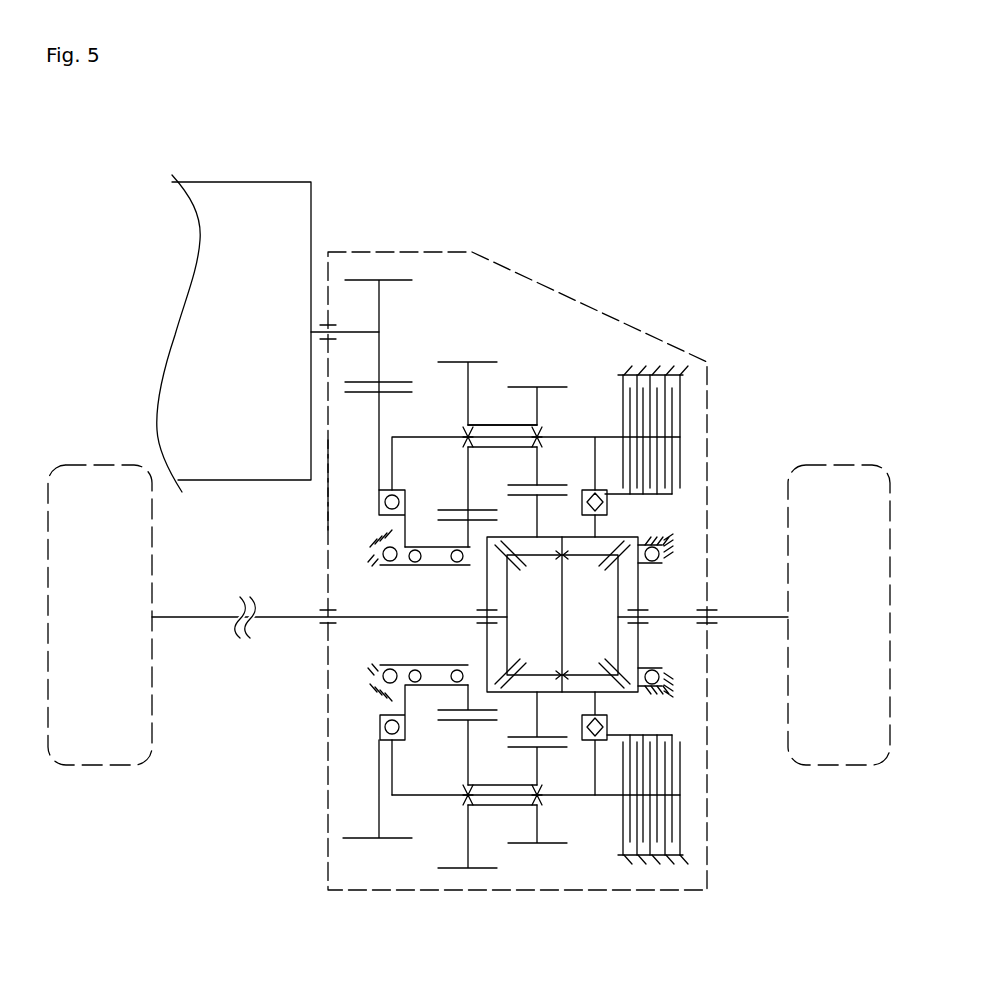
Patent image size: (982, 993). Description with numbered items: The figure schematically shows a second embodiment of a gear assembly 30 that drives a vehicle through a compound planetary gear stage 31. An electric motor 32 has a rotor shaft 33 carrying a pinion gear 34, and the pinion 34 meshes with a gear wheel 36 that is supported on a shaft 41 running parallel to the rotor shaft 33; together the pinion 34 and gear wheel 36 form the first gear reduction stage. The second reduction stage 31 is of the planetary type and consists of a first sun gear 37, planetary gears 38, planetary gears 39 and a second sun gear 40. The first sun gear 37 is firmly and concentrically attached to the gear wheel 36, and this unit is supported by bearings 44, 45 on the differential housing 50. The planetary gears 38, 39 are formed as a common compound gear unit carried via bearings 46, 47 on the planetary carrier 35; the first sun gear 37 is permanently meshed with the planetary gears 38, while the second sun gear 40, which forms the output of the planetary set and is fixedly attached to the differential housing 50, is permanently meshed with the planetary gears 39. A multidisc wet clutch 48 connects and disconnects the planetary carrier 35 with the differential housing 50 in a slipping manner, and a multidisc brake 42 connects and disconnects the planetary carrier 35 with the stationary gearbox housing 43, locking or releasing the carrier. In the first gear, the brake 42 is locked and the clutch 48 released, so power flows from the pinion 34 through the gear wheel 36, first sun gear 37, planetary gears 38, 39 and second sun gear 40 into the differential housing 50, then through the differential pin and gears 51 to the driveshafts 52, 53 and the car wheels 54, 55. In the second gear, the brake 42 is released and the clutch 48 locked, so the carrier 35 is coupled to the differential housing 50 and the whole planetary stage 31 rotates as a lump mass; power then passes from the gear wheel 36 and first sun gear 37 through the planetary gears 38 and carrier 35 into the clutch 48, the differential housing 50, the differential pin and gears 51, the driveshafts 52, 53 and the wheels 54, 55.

The gear assembly 30 is at (662, 264).
The compound planetary gear stage 31 is at (518, 365).
The electric motor 32 is at (243, 200).
The rotor shaft 33 is at (340, 331).
The pinion gear 34 is at (397, 281).
The planetary carrier 35 is at (432, 437).
The gear wheel 36 is at (352, 393).
The first sun gear 37 is at (440, 511).
The planetary gears 38 is at (452, 362).
The planetary gears 39 is at (548, 387).
The second sun gear 40 is at (518, 500).
The shaft 41 is at (388, 558).
The multidisc brake 42 is at (665, 375).
The gearbox housing 43 is at (328, 487).
The bearing 44 is at (417, 567).
The bearing 45 is at (458, 567).
The bearing 46 is at (470, 440).
The bearing 47 is at (540, 442).
The multidisc wet clutch 48 is at (680, 472).
The differential housing 50 is at (641, 580).
The differential pin and gears 51 is at (590, 655).
The driveshaft 52 is at (733, 619).
The driveshaft 53 is at (277, 619).
The car wheel 54 is at (82, 482).
The car wheel 55 is at (820, 460).